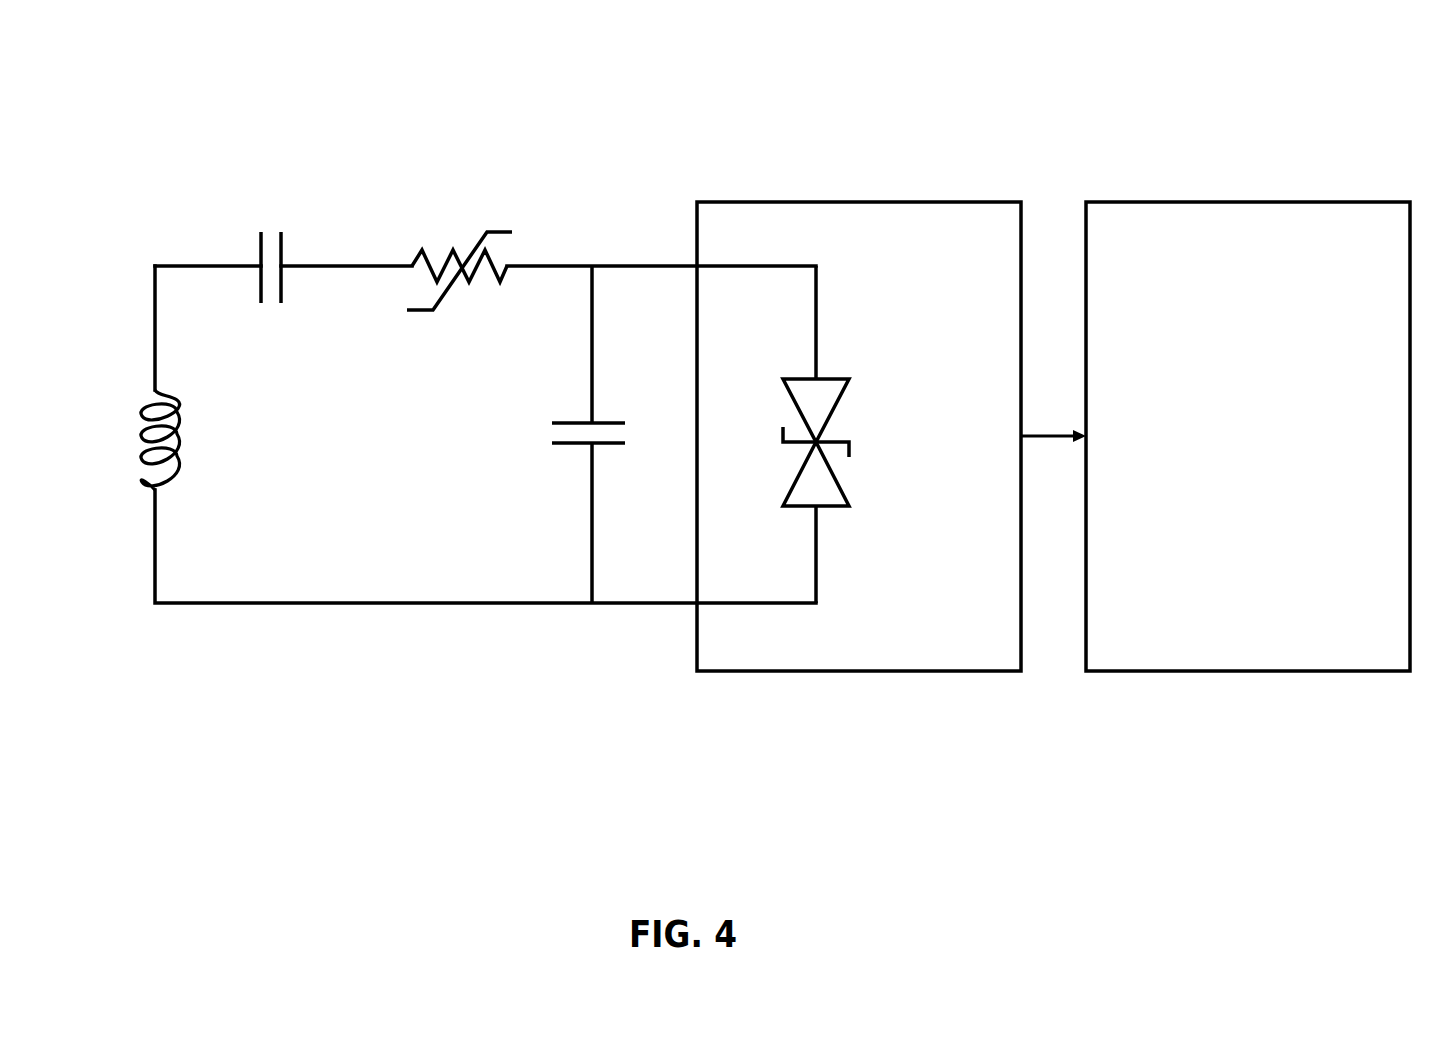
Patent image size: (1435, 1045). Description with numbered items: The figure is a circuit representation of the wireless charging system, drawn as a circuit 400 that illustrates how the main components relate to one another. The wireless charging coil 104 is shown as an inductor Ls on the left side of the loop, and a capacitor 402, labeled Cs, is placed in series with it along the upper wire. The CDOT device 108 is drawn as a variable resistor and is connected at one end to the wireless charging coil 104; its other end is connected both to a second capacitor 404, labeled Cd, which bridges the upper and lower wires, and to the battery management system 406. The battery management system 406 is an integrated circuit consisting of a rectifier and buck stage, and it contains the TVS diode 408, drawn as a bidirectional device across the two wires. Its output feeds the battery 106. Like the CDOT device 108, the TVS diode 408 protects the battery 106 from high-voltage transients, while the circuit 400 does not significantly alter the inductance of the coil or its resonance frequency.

The circuit 400 is at (733, 348).
The wireless charging coil 104 is at (145, 402).
The capacitor 402 is at (274, 205).
The CDOT device 108 is at (456, 212).
The capacitor 404 is at (524, 432).
The battery management system 406 is at (890, 201).
The TVS diode 408 is at (863, 489).
The battery 106 is at (1218, 200).